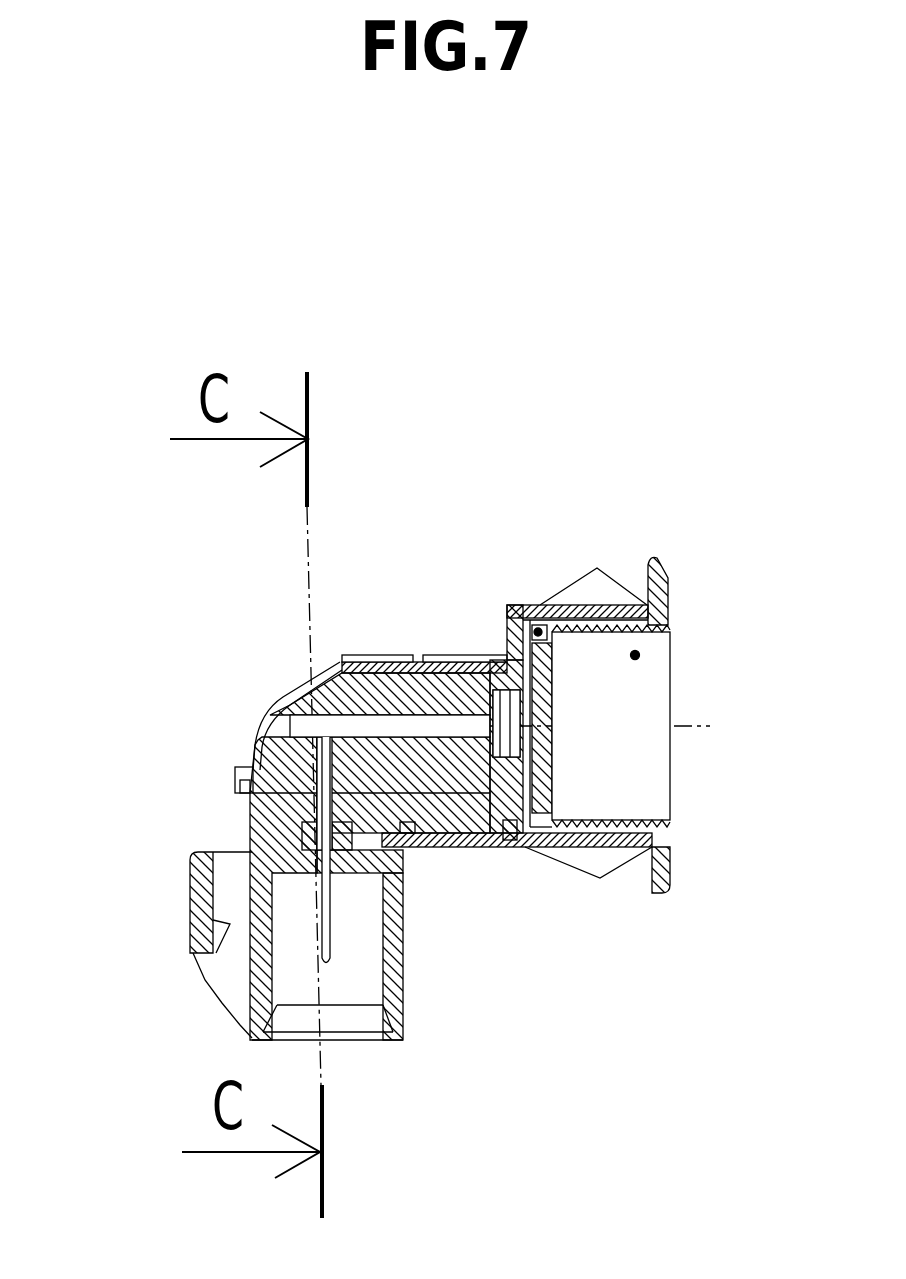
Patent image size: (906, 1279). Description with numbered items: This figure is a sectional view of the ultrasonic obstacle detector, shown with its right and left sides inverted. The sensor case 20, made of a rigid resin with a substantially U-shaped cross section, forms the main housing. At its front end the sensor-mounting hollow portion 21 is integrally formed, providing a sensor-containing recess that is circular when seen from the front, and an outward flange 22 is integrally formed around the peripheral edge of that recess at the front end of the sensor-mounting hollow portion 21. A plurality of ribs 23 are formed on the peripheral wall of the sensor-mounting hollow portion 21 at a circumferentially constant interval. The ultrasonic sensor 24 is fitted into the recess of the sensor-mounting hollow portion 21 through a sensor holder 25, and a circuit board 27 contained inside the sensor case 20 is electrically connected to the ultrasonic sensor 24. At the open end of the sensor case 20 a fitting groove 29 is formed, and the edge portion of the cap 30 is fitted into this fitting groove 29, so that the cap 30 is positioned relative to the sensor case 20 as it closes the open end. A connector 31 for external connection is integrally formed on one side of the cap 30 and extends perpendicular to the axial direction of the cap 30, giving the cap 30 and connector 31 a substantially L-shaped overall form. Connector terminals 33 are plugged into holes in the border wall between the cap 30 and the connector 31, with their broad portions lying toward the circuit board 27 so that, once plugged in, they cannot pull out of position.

The sensor case 20 is at (272, 693).
The sensor-mounting hollow portion 21 is at (603, 603).
The outward flange 22 is at (667, 880).
The ribs 23 is at (605, 863).
The ultrasonic sensor 24 is at (674, 653).
The sensor holder 25 is at (541, 612).
The circuit board 27 is at (403, 722).
The fitting groove 29 is at (247, 795).
The cap 30 is at (455, 848).
The connector for external connection 31 is at (252, 973).
The connector terminals 33 is at (330, 940).